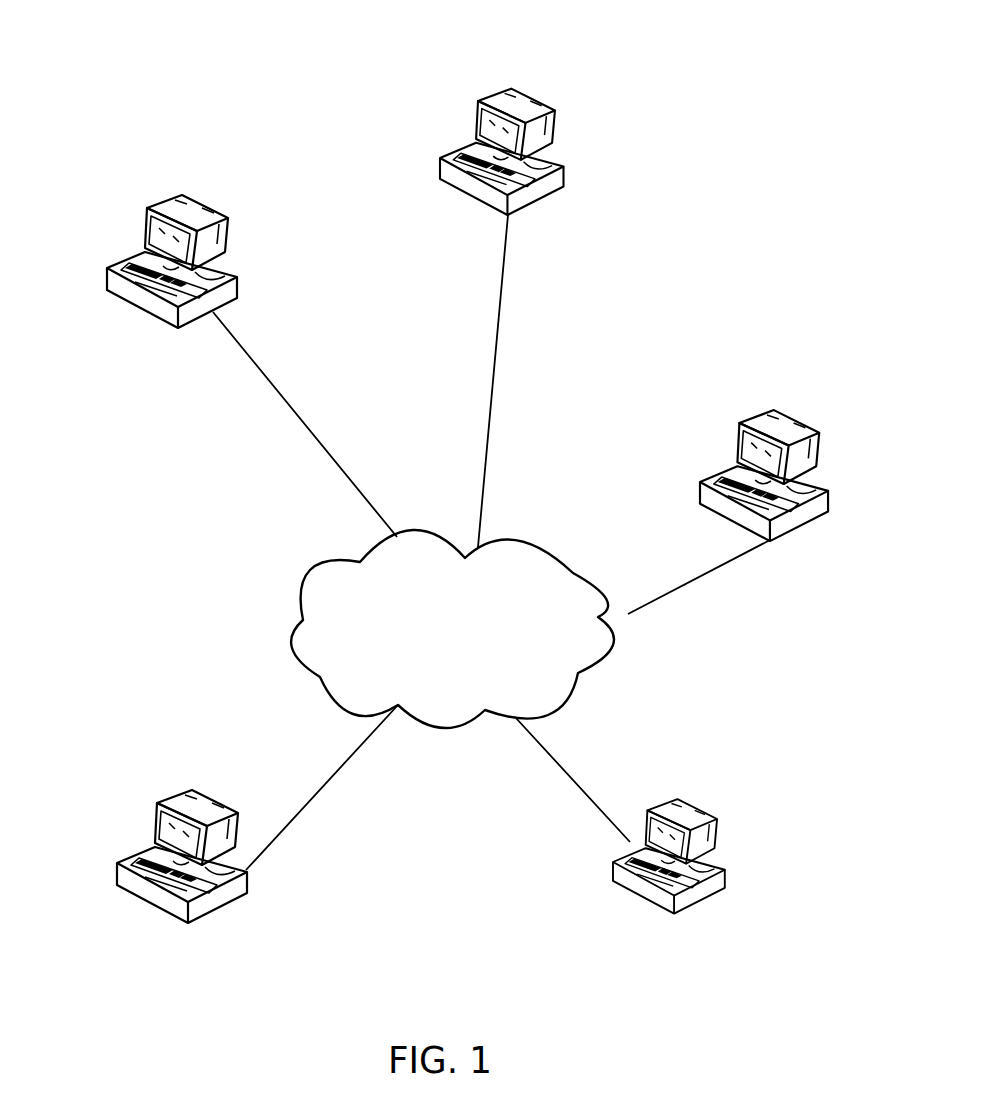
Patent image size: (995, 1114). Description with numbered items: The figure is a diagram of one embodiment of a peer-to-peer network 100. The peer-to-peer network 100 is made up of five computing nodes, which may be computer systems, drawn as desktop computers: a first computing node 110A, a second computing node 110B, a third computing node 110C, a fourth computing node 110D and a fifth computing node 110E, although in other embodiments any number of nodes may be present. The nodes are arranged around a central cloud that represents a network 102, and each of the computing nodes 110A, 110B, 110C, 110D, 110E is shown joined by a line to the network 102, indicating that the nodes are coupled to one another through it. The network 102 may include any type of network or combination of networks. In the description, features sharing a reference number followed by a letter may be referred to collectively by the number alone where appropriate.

The peer-to-peer network 100 is at (342, 101).
The network 102 is at (473, 663).
The computing node 110A is at (112, 294).
The computing node 110B is at (569, 181).
The computing node 110C is at (812, 528).
The computing node 110D is at (608, 876).
The computing node 110E is at (297, 925).